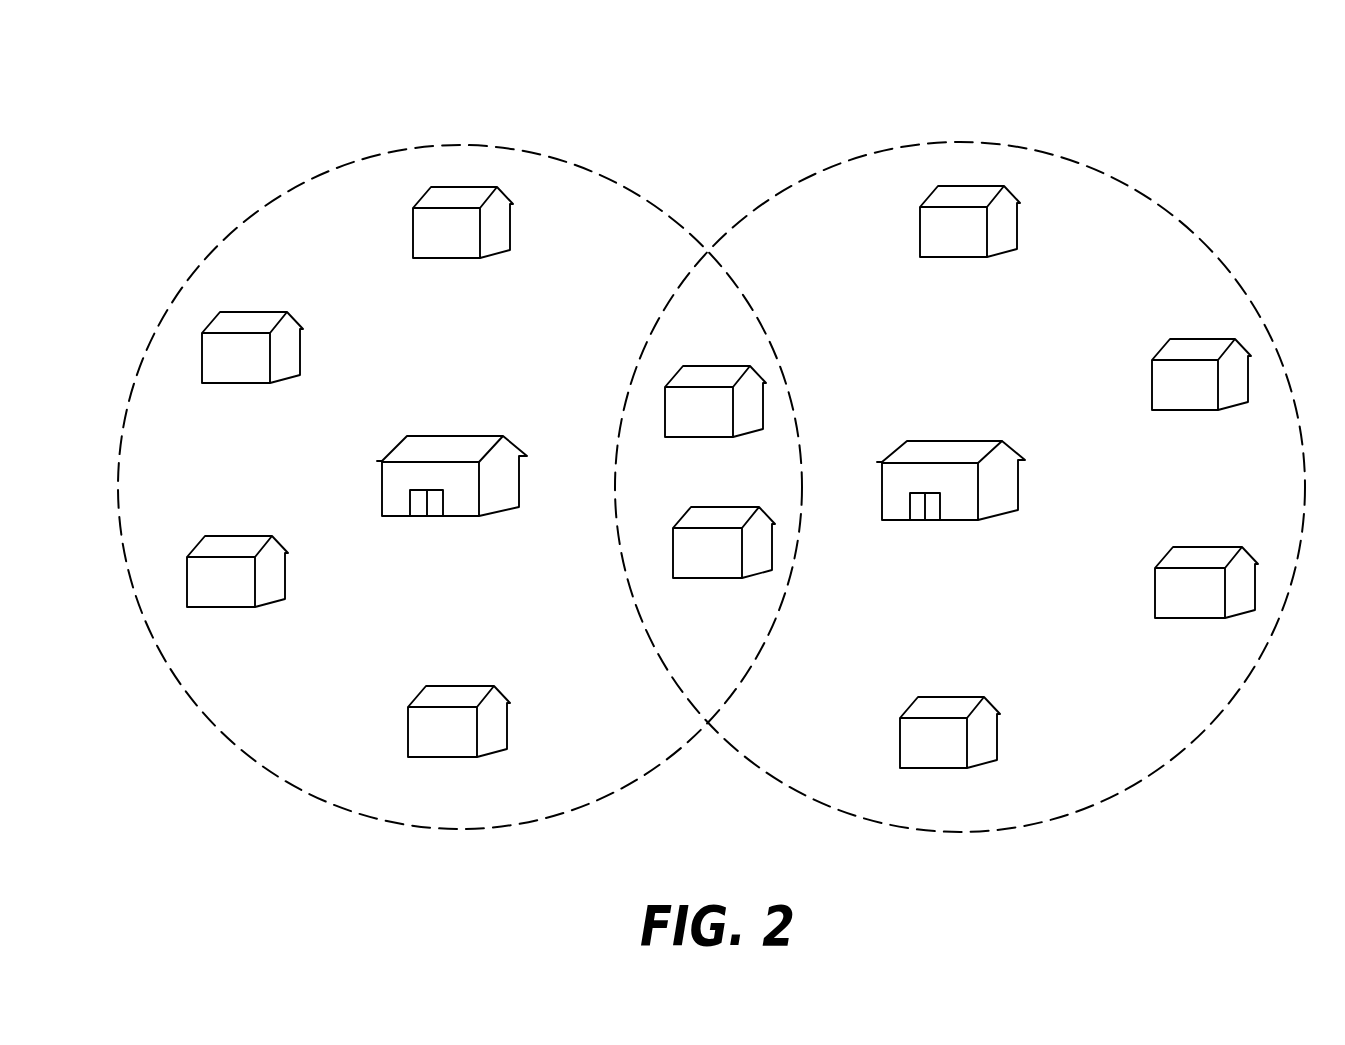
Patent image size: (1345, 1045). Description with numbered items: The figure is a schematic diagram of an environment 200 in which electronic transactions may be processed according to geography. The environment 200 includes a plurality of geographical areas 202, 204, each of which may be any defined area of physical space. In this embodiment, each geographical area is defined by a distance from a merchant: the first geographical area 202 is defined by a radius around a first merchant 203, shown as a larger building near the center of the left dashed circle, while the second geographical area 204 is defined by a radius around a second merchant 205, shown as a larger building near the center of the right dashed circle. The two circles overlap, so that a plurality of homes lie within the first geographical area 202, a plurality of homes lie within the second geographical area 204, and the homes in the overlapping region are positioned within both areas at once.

The environment 200 is at (1213, 112).
The geographical area 202 is at (369, 817).
The merchant 203 is at (455, 518).
The geographical area 204 is at (1128, 792).
The merchant 205 is at (955, 523).